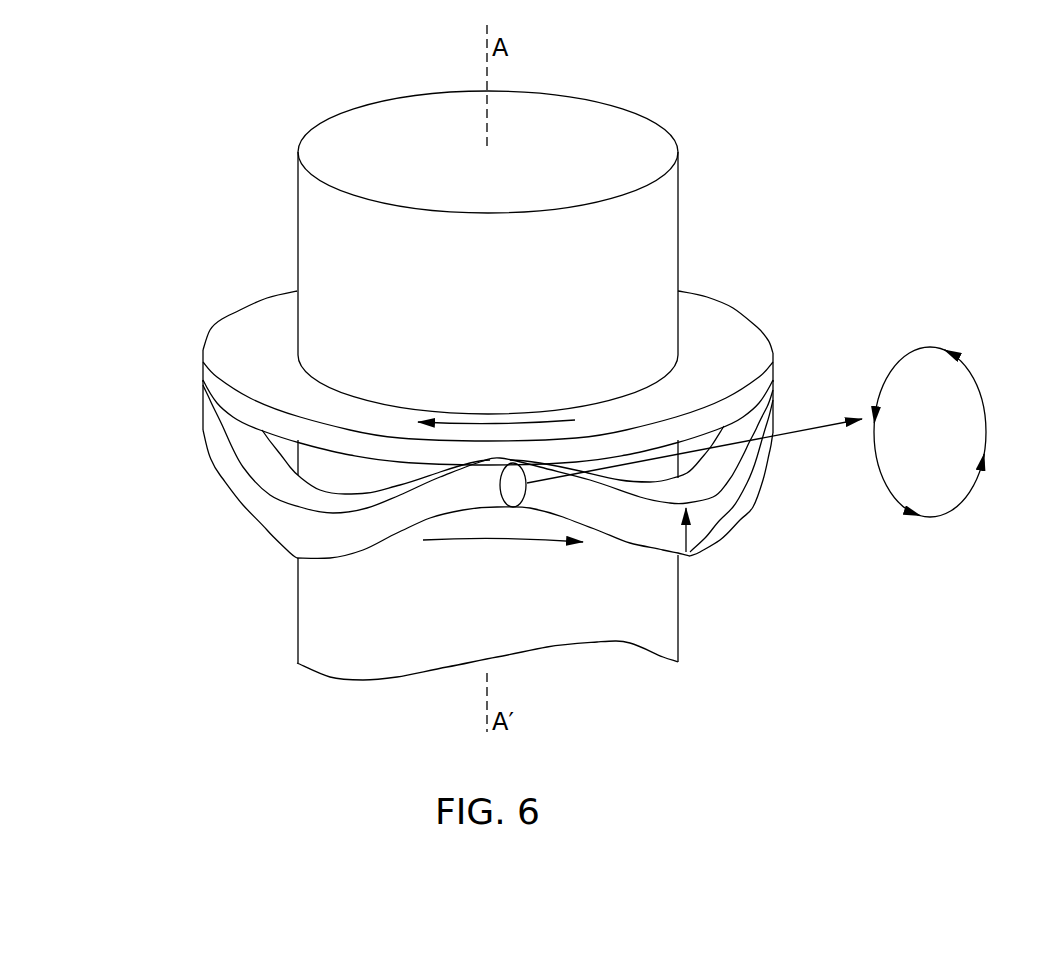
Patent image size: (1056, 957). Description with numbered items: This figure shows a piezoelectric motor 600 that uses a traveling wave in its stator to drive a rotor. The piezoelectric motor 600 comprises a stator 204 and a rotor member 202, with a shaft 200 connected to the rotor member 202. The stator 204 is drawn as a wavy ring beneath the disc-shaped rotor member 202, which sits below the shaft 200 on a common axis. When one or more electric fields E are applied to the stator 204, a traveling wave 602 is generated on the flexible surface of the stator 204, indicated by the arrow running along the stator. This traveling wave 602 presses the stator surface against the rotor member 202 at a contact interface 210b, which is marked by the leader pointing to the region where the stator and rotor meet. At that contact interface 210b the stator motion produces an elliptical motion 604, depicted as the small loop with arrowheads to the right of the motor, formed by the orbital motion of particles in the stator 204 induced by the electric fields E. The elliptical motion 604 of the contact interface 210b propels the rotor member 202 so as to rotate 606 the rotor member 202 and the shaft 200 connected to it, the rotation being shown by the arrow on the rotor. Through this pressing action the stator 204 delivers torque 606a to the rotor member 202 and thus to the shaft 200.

The shaft 200 is at (662, 240).
The rotor member 202 is at (242, 323).
The stator 204 is at (248, 493).
The contact interface 210b is at (478, 462).
The piezoelectric motor 600 is at (830, 131).
The traveling wave 602 is at (472, 547).
The elliptical motion 604 is at (981, 400).
The rotation 606 is at (520, 428).
The torque 606a is at (490, 427).
The electric field E is at (688, 538).